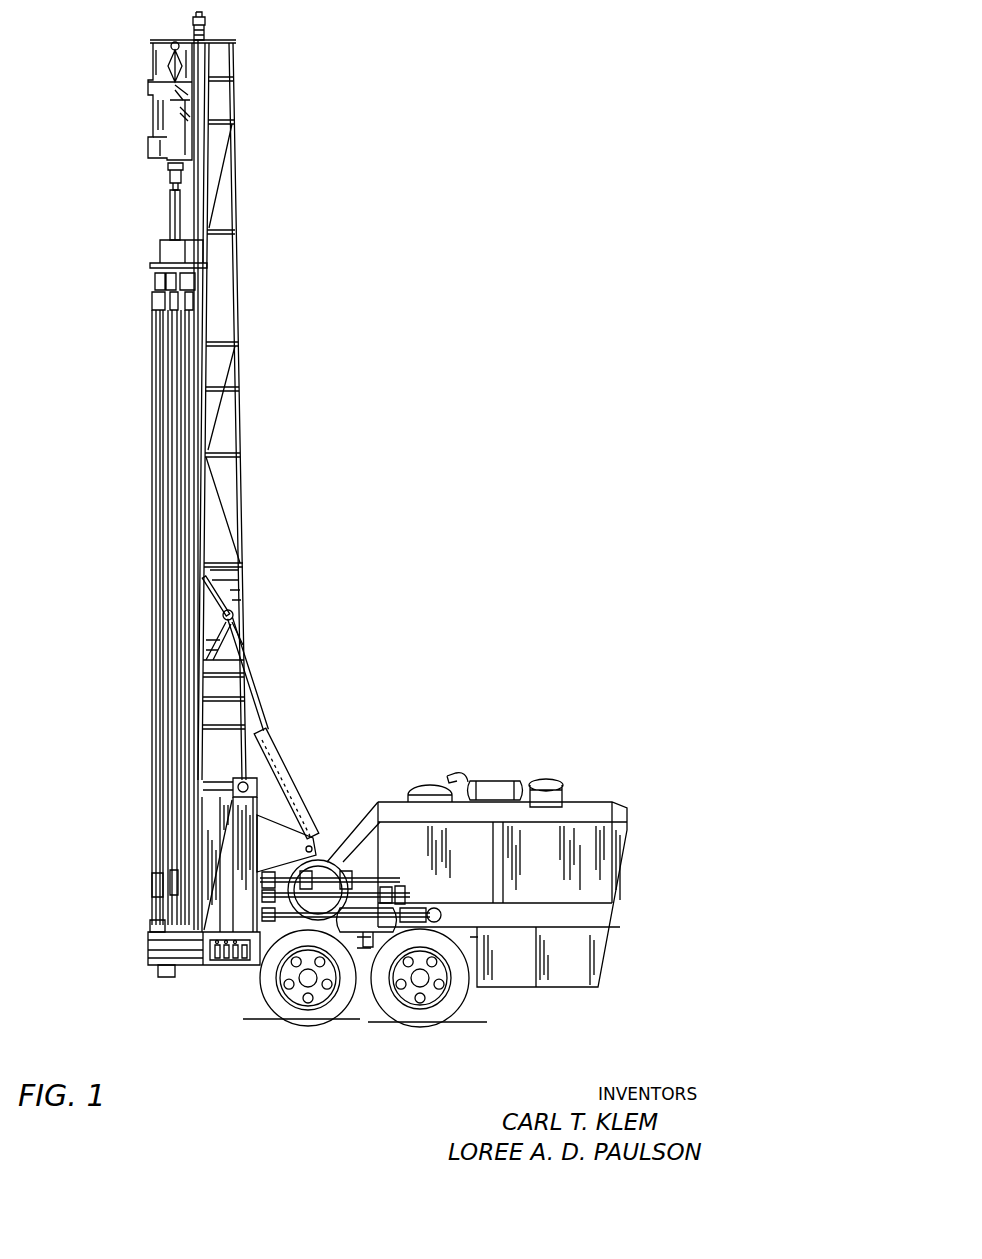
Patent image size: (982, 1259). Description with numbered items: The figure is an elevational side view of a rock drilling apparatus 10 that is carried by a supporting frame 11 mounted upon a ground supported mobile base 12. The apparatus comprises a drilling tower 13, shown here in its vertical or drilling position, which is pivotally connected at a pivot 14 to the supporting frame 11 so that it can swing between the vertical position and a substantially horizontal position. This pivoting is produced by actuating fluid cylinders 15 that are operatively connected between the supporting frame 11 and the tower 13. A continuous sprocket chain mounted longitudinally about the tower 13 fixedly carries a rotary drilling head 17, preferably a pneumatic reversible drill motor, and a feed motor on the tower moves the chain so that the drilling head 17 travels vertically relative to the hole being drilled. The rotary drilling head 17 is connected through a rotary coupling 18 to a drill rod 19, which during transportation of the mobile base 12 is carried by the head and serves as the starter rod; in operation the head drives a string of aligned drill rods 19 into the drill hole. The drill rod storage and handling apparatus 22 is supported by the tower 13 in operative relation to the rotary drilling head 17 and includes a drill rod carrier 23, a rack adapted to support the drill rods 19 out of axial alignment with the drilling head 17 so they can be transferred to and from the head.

The rock drilling apparatus 10 is at (538, 145).
The supporting frame 11 is at (235, 851).
The mobile base 12 is at (590, 912).
The drilling tower 13 is at (242, 313).
The pivotal connection 14 is at (249, 785).
The fluid cylinders 15 is at (277, 748).
The rotary drilling head 17 is at (166, 122).
The rotary coupling 18 is at (169, 175).
The drill rod 19 is at (170, 222).
The drill rod storage and handling apparatus 22 is at (58, 372).
The drill rod carrier 23 is at (165, 263).